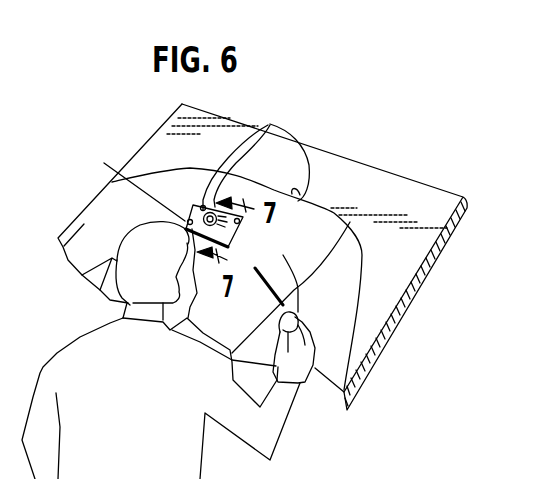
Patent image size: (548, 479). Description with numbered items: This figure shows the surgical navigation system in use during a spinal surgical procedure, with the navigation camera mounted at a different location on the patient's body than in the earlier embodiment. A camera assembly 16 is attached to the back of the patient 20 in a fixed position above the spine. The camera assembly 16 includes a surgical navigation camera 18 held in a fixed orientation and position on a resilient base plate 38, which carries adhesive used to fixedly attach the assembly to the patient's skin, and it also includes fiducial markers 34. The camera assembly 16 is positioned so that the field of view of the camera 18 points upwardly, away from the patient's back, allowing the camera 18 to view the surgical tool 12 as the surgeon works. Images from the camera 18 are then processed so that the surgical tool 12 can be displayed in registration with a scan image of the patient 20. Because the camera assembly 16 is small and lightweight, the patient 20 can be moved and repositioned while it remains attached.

The surgical tool 12 is at (274, 289).
The camera assembly 16 is at (193, 210).
The surgical navigation camera 18 is at (175, 175).
The patient 20 is at (311, 167).
The fiducial markers 34 is at (268, 127).
The resilient base plate 38 is at (186, 225).